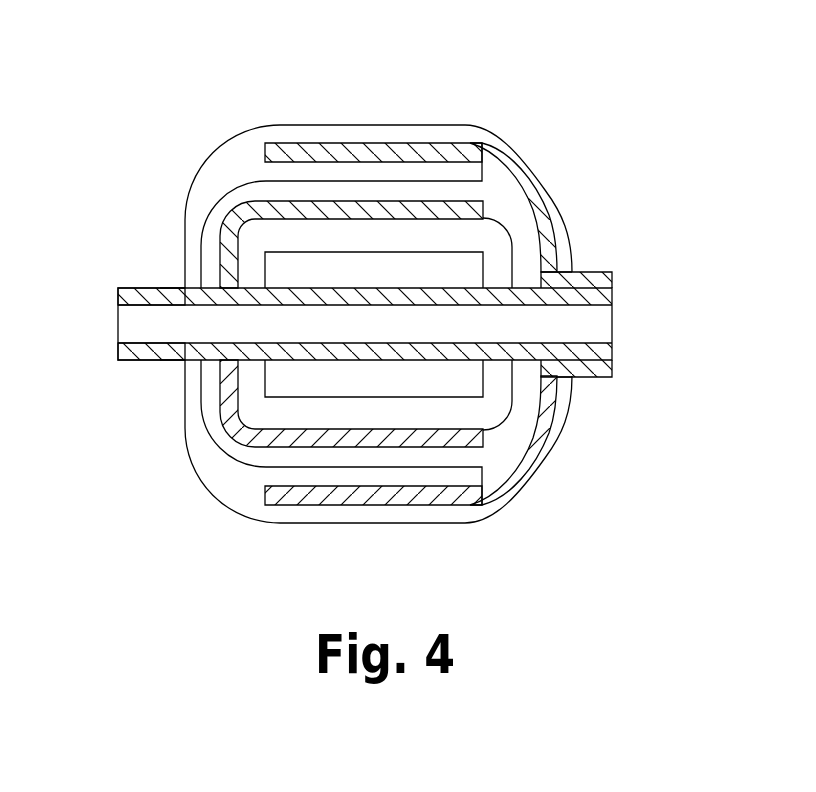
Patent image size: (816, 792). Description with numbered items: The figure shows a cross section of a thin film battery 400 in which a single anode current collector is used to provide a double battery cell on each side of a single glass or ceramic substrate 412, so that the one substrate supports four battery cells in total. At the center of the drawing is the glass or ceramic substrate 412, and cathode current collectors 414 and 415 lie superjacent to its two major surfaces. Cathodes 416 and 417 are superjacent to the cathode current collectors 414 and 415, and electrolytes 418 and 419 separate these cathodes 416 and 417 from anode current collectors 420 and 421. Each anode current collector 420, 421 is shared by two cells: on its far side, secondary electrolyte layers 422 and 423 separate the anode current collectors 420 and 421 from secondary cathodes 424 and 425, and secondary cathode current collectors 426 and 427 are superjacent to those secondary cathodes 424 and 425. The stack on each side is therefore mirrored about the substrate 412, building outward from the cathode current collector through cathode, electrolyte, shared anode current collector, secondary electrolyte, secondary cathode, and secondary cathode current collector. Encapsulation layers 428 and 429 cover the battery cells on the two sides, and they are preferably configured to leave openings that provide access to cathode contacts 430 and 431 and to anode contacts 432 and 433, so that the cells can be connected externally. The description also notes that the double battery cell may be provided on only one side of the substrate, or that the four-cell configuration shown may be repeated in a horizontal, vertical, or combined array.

The thin film battery 400 is at (575, 66).
The glass or ceramic substrate 412 is at (588, 320).
The cathode current collector 414 is at (612, 293).
The cathode current collector 415 is at (600, 348).
The cathode 416 is at (398, 280).
The cathode 417 is at (394, 390).
The electrolyte 418 is at (210, 250).
The electrolyte 419 is at (250, 390).
The anode current collector 420 is at (142, 293).
The anode current collector 421 is at (128, 357).
The secondary electrolyte layer 422 is at (235, 197).
The secondary electrolyte layer 423 is at (233, 447).
The secondary cathode 424 is at (308, 172).
The secondary cathode 425 is at (320, 478).
The secondary cathode current collector 426 is at (450, 150).
The secondary cathode current collector 427 is at (447, 497).
The encapsulation layer 428 is at (376, 133).
The encapsulation layer 429 is at (383, 512).
The cathode contact 430 is at (594, 246).
The cathode contact 431 is at (596, 392).
The anode contact 432 is at (152, 272).
The anode contact 433 is at (152, 376).